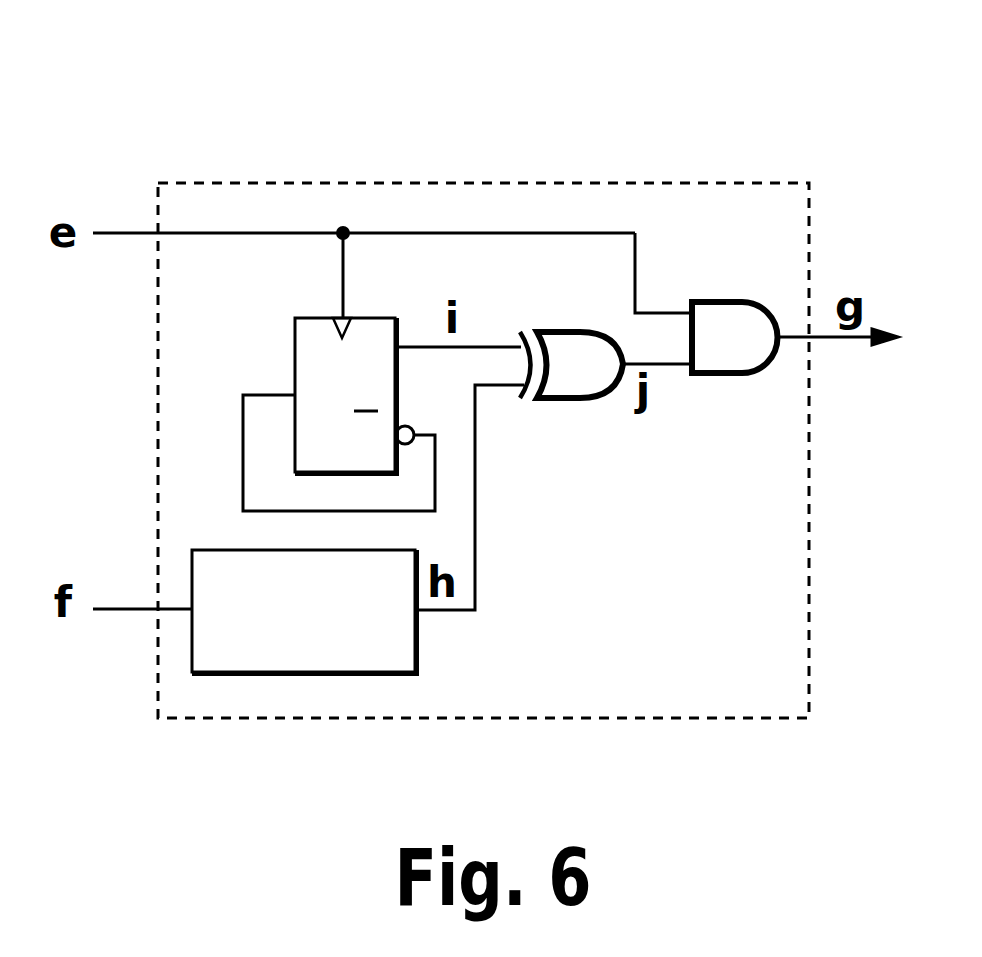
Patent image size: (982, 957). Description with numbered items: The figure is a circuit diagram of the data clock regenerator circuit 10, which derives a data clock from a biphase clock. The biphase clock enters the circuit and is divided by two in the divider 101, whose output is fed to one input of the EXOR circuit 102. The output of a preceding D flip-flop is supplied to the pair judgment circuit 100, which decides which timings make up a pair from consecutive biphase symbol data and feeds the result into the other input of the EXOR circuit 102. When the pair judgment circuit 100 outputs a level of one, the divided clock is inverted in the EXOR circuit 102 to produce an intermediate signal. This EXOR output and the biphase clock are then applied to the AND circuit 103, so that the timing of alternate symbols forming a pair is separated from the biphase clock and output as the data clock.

The data clock regenerator circuit 10 is at (733, 182).
The pair judgment circuit 100 is at (416, 648).
The divider 101 is at (294, 348).
The EXOR circuit 102 is at (587, 400).
The AND circuit 103 is at (735, 376).